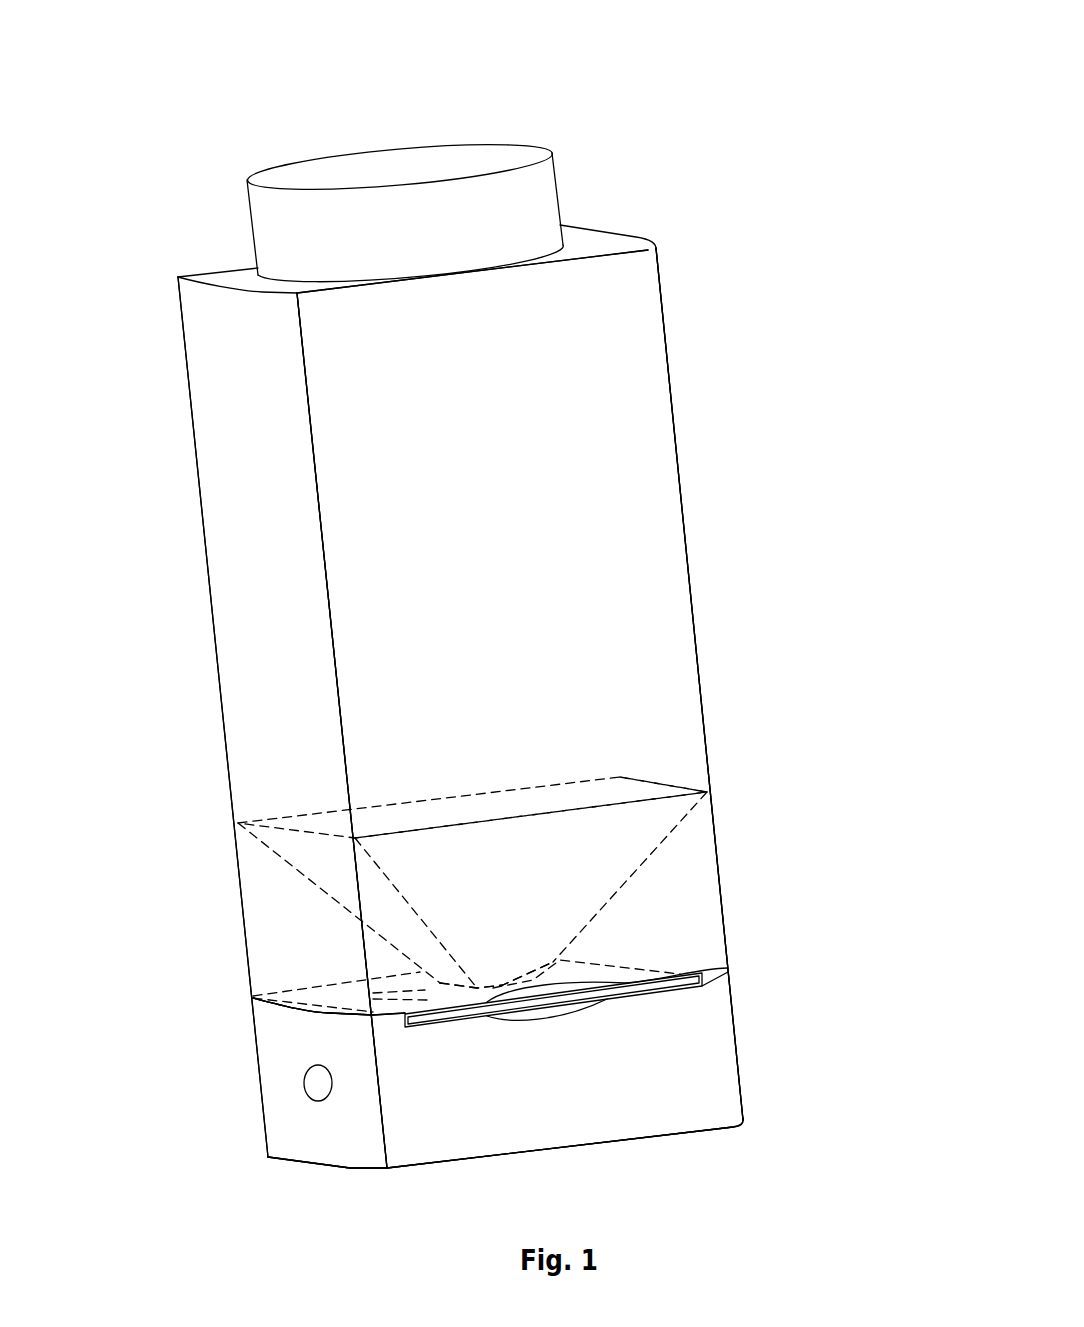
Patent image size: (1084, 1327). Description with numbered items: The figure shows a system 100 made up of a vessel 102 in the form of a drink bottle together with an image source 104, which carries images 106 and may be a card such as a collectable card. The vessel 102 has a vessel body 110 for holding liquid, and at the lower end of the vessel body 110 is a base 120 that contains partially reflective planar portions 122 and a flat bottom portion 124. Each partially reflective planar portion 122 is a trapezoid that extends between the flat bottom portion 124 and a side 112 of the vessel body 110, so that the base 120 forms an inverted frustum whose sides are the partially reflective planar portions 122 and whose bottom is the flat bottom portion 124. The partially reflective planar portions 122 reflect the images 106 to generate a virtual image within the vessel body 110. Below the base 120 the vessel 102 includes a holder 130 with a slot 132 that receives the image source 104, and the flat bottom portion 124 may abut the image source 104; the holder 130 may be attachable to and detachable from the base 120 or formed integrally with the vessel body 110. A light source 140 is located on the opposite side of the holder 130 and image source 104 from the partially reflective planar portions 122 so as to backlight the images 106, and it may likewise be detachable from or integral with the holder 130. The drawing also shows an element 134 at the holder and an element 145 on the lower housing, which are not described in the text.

The system 100 is at (572, 62).
The vessel 102 is at (220, 247).
The image source 104 is at (647, 972).
The images 106 is at (360, 995).
The vessel body 110 is at (672, 378).
The side 112 is at (710, 650).
The base 120 is at (280, 885).
The partially reflective planar portions 122 is at (655, 823).
The flat bottom portion 124 is at (453, 980).
The holder 130 is at (303, 1018).
The slot 132 is at (705, 982).
The lens 134 is at (568, 1018).
The light source 140 is at (743, 1072).
The button 145 is at (318, 1087).